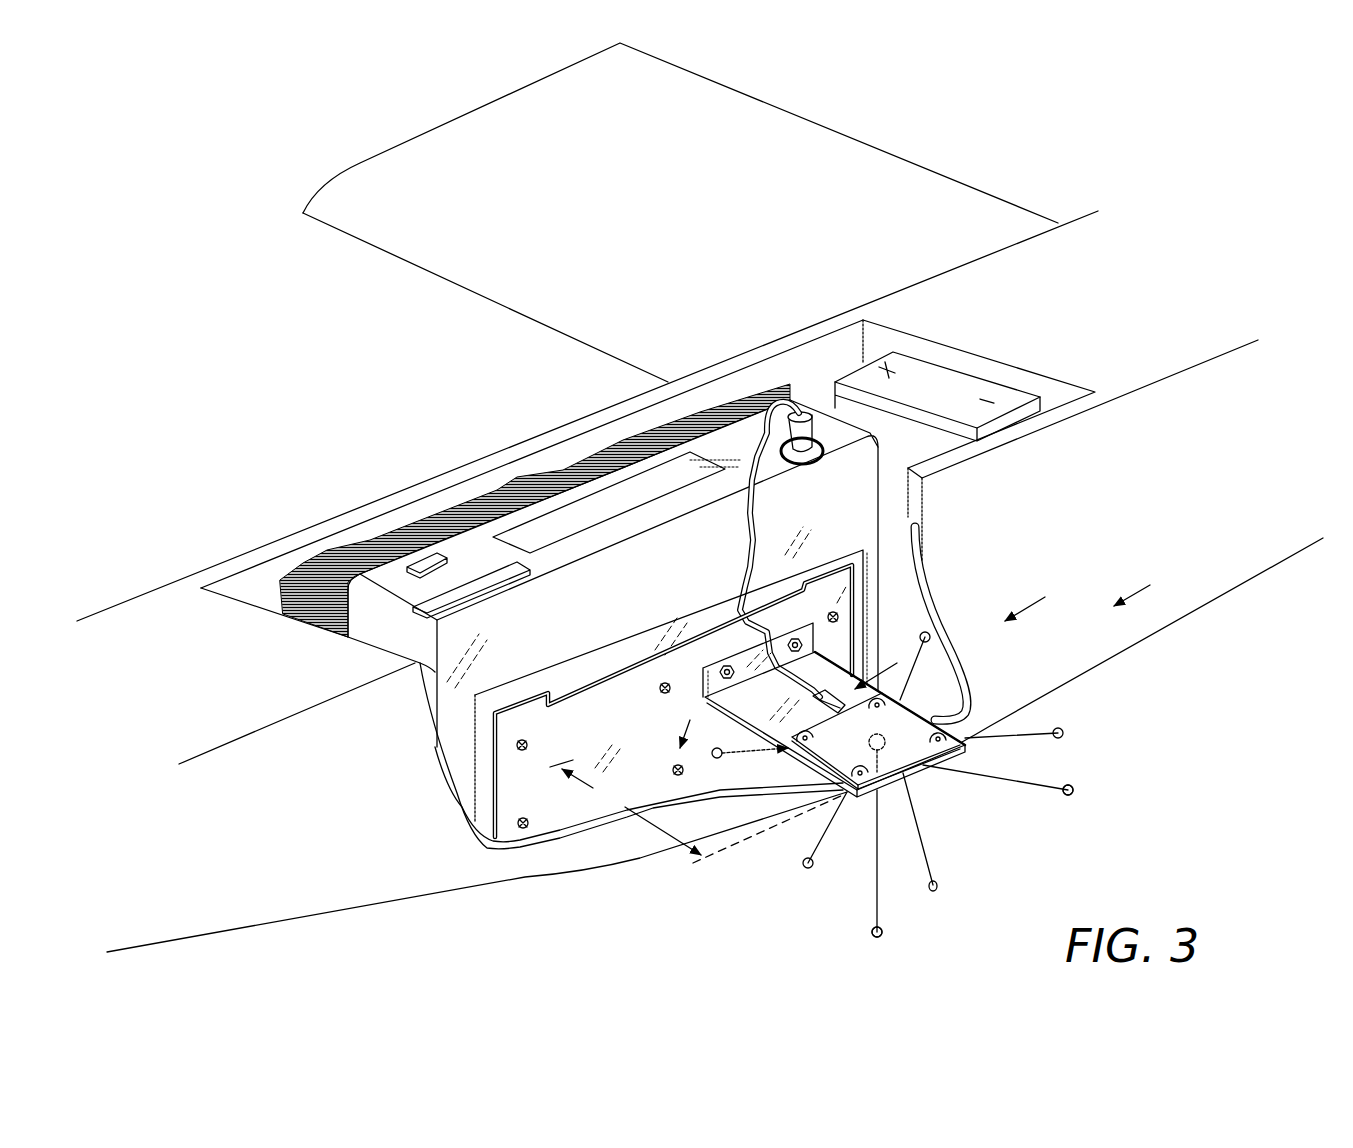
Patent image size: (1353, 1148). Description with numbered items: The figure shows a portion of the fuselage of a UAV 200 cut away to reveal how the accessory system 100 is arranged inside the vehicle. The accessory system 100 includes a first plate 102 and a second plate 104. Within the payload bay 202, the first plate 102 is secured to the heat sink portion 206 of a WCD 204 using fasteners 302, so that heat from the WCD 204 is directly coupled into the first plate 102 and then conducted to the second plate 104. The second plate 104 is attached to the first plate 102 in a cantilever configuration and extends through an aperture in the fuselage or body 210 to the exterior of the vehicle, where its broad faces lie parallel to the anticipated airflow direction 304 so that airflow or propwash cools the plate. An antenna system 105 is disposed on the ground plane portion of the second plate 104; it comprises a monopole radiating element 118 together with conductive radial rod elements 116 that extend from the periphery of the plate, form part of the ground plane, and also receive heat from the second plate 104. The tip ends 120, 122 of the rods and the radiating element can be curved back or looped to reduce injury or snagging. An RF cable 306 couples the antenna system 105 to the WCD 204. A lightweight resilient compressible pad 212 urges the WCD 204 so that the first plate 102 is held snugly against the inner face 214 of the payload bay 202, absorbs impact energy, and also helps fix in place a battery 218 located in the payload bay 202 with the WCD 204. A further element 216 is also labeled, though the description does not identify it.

The accessory system 100 is at (756, 848).
The first plate 102 is at (660, 746).
The second plate 104 is at (840, 684).
The antenna system 105 is at (980, 713).
The conductive radial rod elements 116 is at (832, 830).
The radiating element 118 is at (878, 850).
The tip end 120 is at (1073, 792).
The tip end 122 is at (882, 935).
The UAV 200 is at (398, 97).
The payload bay 202 is at (250, 592).
The WCD 204 is at (493, 566).
The heat sink portion 206 is at (617, 650).
The fuselage or body 210 is at (317, 842).
The resilient compressible pad 212 is at (518, 477).
The inner face 214 is at (910, 522).
The recess wall 216 is at (922, 565).
The battery 218 is at (975, 388).
The fasteners 302 is at (527, 748).
The airflow direction 304 is at (931, 659).
The RF cable 306 is at (752, 547).